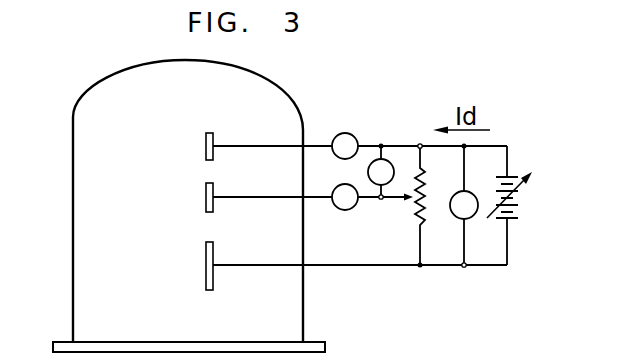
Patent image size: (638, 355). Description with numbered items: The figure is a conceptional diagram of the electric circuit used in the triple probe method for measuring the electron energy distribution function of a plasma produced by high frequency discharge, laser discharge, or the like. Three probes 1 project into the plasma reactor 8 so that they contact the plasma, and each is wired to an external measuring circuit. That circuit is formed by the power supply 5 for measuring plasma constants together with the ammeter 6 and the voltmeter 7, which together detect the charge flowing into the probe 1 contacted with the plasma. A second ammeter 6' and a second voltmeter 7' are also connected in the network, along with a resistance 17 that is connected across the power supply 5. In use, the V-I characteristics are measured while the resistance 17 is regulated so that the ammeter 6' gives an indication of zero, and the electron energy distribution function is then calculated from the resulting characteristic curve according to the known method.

The probe 1 is at (183, 134).
The power supply for measuring plasma constants 5 is at (518, 199).
The ammeter 6 is at (345, 122).
The ammeter 6' is at (345, 218).
The voltmeter 7 is at (389, 148).
The voltmeter 7' is at (472, 225).
The plasma reactor 8 is at (280, 71).
The resistance 17 is at (422, 214).